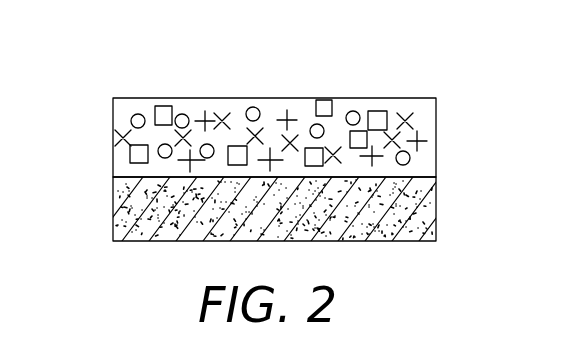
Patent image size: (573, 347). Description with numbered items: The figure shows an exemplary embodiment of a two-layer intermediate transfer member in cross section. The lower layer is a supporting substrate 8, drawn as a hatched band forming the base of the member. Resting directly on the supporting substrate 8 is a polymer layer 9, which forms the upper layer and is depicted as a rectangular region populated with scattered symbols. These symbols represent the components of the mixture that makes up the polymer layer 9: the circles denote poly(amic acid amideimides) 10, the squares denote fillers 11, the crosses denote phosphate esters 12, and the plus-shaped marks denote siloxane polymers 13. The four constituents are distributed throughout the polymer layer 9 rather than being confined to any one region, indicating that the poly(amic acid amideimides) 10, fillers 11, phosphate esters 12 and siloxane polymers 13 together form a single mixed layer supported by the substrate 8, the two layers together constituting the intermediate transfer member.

The supporting substrate 8 is at (437, 203).
The polymer layer 9 is at (437, 110).
The poly(amic acid amideimides) 10 is at (131, 119).
The fillers 11 is at (377, 108).
The phosphate esters 12 is at (222, 112).
The siloxane polymers 13 is at (288, 112).